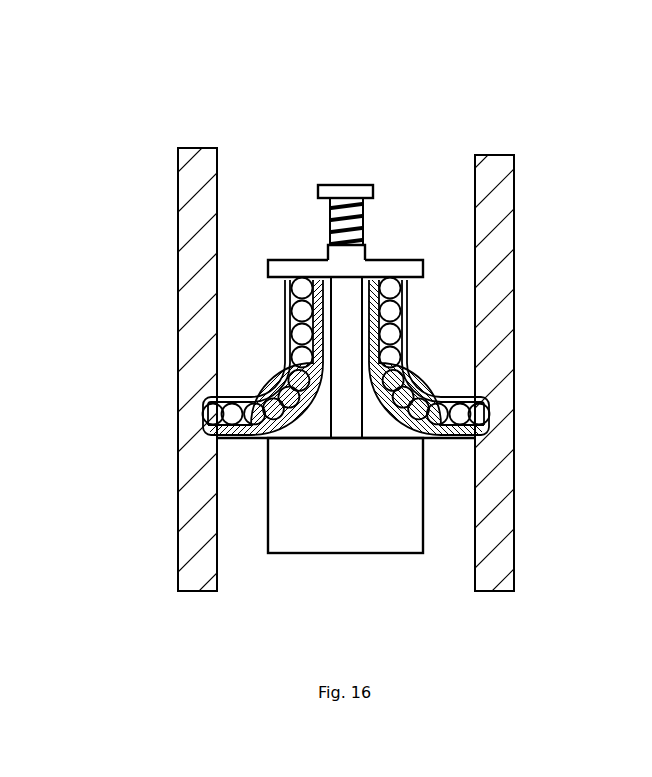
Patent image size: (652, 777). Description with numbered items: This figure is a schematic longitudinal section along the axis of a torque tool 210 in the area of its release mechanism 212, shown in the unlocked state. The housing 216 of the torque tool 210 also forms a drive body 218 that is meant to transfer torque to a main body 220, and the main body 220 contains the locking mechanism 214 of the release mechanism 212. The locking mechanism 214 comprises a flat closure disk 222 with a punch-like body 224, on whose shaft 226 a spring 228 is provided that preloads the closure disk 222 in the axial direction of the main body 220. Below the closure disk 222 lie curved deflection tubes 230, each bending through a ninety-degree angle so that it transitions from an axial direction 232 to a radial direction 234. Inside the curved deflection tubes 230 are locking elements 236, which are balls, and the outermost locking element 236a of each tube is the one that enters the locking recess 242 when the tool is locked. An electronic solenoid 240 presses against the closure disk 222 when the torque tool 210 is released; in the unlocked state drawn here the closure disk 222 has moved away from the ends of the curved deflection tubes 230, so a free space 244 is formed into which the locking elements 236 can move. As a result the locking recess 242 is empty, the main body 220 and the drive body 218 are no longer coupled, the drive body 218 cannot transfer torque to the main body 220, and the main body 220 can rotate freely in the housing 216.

The torque tool 210 is at (535, 152).
The release mechanism 212 is at (423, 347).
The locking mechanism 214 is at (248, 528).
The housing 216 is at (497, 505).
The drive body 218 is at (195, 213).
The main body 220 is at (179, 591).
The flat closure disk 222 is at (295, 268).
The punch-like body 224 is at (348, 262).
The shaft 226 is at (347, 186).
The spring 228 is at (332, 212).
The curved deflection tube 230 is at (290, 357).
The axial direction 232 is at (410, 317).
The radial direction 234 is at (481, 407).
The locking elements 236 is at (378, 440).
The outermost locking element 236a is at (232, 438).
The electronic solenoid 240 is at (358, 517).
The locking recess 242 is at (213, 432).
The free space 244 is at (286, 280).